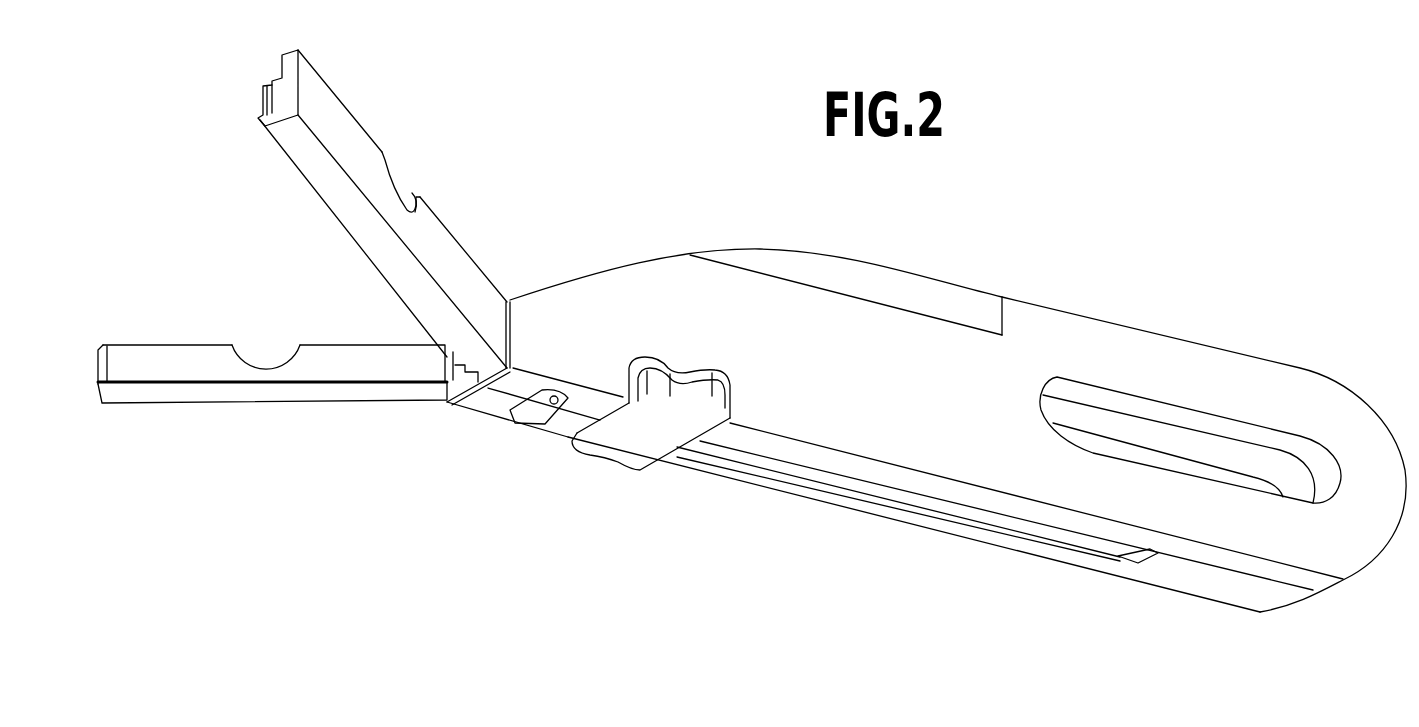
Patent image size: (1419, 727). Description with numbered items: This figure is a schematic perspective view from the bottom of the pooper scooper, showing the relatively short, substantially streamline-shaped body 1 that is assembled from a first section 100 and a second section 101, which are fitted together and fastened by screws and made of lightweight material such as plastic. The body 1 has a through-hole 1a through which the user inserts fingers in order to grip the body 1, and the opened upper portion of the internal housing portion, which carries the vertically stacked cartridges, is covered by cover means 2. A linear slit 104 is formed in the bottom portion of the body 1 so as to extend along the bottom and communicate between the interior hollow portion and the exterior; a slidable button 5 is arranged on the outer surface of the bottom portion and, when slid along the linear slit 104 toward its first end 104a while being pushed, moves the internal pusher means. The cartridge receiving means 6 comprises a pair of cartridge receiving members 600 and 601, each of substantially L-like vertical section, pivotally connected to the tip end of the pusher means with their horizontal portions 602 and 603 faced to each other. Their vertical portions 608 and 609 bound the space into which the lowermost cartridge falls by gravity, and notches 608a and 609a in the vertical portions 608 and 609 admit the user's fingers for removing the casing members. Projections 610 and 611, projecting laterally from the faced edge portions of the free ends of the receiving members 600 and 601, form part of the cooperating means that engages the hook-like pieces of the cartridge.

The body 1 is at (1149, 331).
The through-hole 1a is at (1206, 467).
The cover means 2 is at (881, 261).
The slidable button 5 is at (633, 447).
The cartridge receiving means 6 is at (446, 212).
The first section 100 is at (1258, 597).
The second section 101 is at (1200, 560).
The linear slit 104 is at (888, 500).
The first end of the linear slit 104a is at (1118, 557).
The cartridge receiving member 600 is at (158, 344).
The cartridge receiving member 601 is at (337, 94).
The horizontal portion 602 is at (207, 392).
The horizontal portion 603 is at (302, 147).
The vertical portion 608 is at (352, 357).
The notch 608a is at (280, 365).
The vertical portion 609 is at (450, 267).
The notch 609a is at (400, 197).
The projection 610 is at (97, 372).
The projection 611 is at (262, 100).